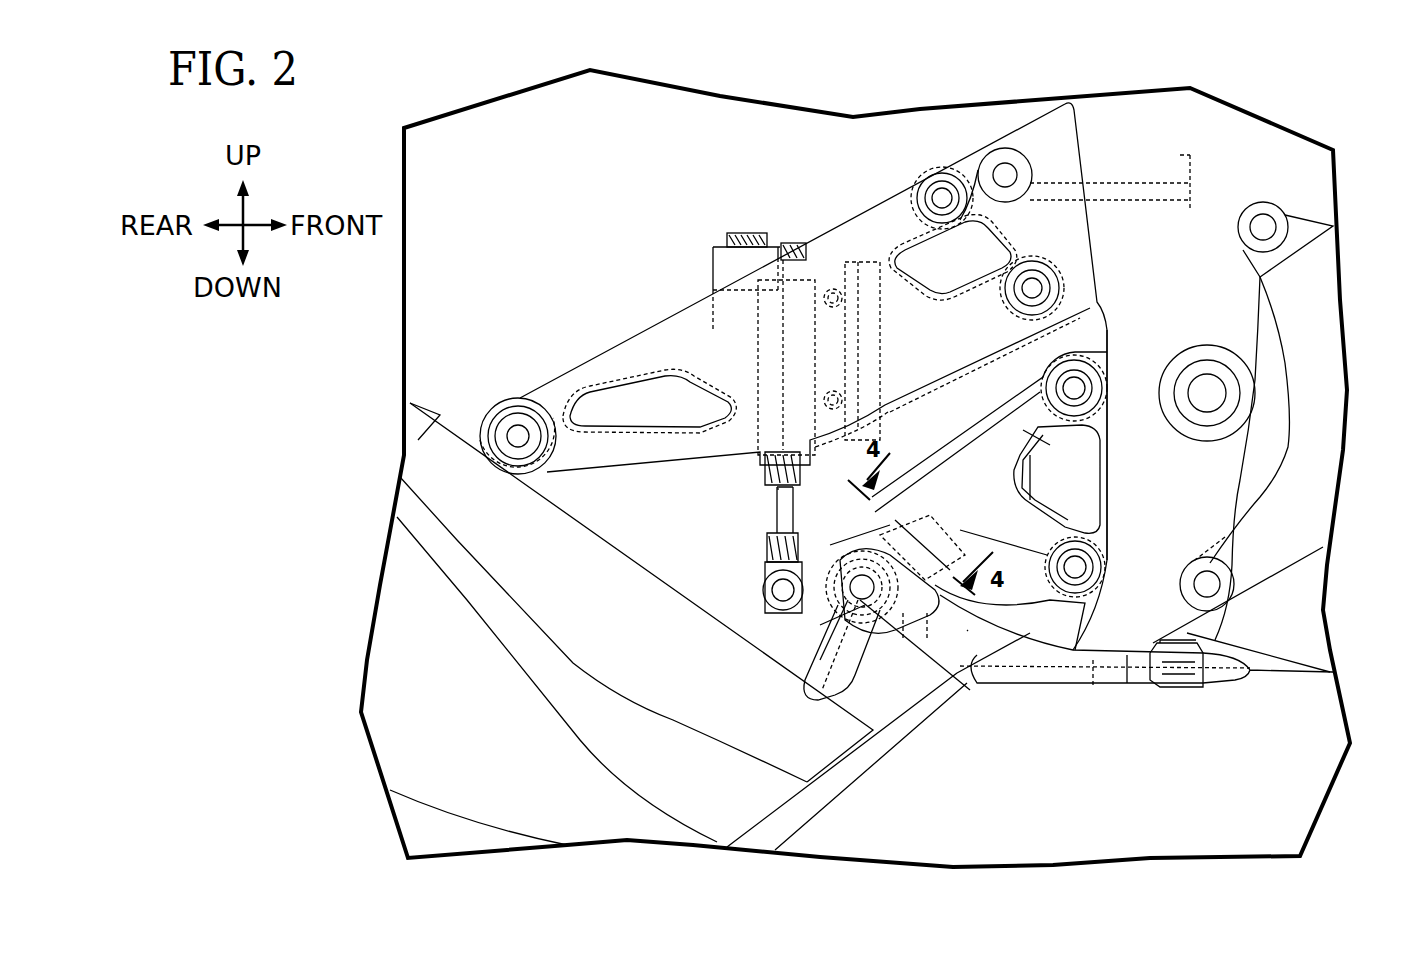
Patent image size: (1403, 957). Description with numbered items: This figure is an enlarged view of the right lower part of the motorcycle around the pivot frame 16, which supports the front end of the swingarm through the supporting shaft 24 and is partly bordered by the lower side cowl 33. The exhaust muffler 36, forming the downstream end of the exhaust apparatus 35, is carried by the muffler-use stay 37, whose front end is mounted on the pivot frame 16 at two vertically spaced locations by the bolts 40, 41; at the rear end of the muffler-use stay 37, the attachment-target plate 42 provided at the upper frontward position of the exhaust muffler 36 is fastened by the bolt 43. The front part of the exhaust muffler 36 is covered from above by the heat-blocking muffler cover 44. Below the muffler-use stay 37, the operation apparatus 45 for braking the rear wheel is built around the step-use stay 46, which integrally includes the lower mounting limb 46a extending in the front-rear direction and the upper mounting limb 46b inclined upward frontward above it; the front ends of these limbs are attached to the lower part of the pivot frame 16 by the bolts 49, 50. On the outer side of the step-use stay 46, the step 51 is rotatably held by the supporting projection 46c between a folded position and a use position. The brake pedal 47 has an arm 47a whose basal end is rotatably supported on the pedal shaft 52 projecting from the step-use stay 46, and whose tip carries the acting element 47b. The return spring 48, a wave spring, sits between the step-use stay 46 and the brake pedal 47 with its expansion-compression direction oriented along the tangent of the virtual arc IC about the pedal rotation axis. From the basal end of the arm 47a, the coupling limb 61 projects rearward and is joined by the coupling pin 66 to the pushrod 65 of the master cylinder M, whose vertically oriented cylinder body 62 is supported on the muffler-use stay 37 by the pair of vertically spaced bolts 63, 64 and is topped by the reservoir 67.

The pivot frame 16 is at (1210, 495).
The supporting shaft 24 is at (1217, 403).
The lower side cowl 33 is at (1318, 718).
The exhaust apparatus 35 is at (843, 760).
The exhaust muffler 36 is at (495, 800).
The muffler-use stay 37 is at (545, 395).
The bolt 40 is at (940, 172).
The bolt 41 is at (1062, 296).
The attachment-target plate 42 is at (478, 418).
The bolt 43 is at (518, 425).
The muffler cover 44 is at (592, 663).
The operation apparatus 45 is at (966, 681).
The step-use stay 46 is at (950, 450).
The lower mounting limb 46a is at (1047, 530).
The upper mounting limb 46b is at (1023, 430).
The supporting projection 46c is at (767, 647).
The brake pedal 47 is at (1058, 682).
The arm 47a is at (927, 637).
The acting element 47b is at (1250, 670).
The return spring 48 is at (933, 533).
The bolt 49 is at (1090, 568).
The bolt 50 is at (1080, 380).
The step 51 is at (788, 673).
The pedal shaft 52 is at (818, 693).
The coupling limb 61 is at (790, 608).
The cylinder body 62 is at (753, 450).
The bolt 63 is at (843, 300).
The bolt 64 is at (845, 395).
The pushrod 65 is at (772, 525).
The coupling pin 66 is at (765, 585).
The reservoir 67 is at (712, 305).
The master cylinder M is at (757, 461).
The virtual arc IC is at (967, 630).